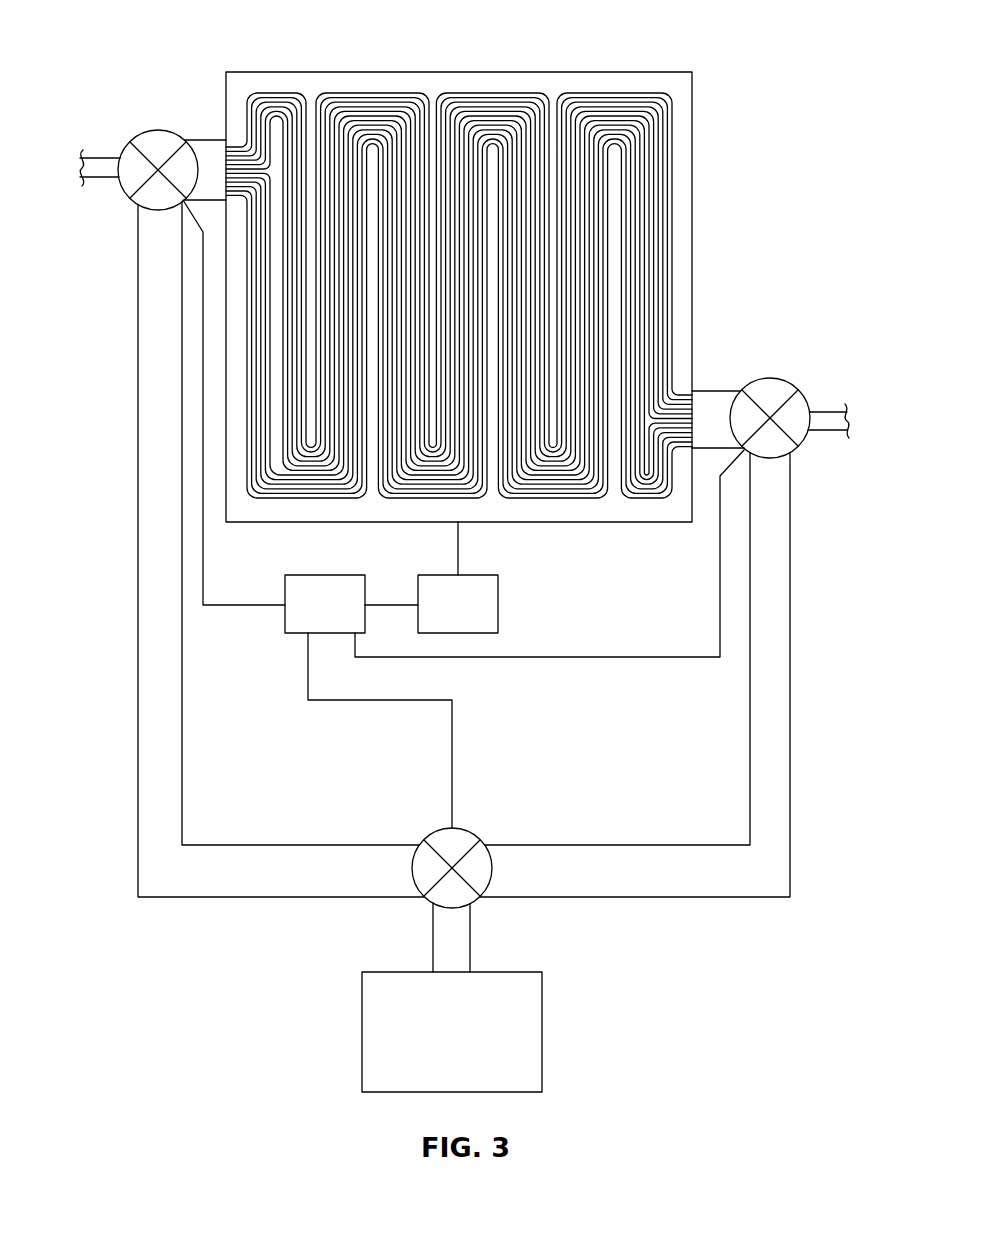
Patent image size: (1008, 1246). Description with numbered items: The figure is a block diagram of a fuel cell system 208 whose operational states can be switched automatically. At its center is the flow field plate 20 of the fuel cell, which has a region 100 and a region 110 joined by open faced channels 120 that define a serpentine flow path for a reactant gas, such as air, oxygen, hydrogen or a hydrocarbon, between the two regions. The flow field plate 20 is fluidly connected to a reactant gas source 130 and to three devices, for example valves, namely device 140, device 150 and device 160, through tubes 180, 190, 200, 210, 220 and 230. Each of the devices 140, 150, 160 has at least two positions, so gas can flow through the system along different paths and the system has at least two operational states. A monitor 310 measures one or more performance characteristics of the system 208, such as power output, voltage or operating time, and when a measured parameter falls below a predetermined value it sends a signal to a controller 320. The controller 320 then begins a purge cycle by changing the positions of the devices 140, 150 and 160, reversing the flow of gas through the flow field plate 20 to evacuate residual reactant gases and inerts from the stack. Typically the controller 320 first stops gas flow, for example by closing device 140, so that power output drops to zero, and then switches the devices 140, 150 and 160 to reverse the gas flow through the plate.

The flow field plate 20 is at (632, 82).
The region 100 is at (455, 251).
The region 110 is at (754, 379).
The open faced channels 120 is at (668, 205).
The reactant gas source 130 is at (468, 1041).
The device 140 is at (463, 835).
The device 150 is at (158, 130).
The device 160 is at (803, 440).
The tube 180 is at (270, 892).
The tube 190 is at (212, 147).
The tube 200 is at (107, 168).
The system 208 is at (738, 240).
The tube 210 is at (668, 892).
The tube 220 is at (822, 417).
The tube 230 is at (718, 402).
The monitor 310 is at (476, 614).
The controller 320 is at (325, 604).